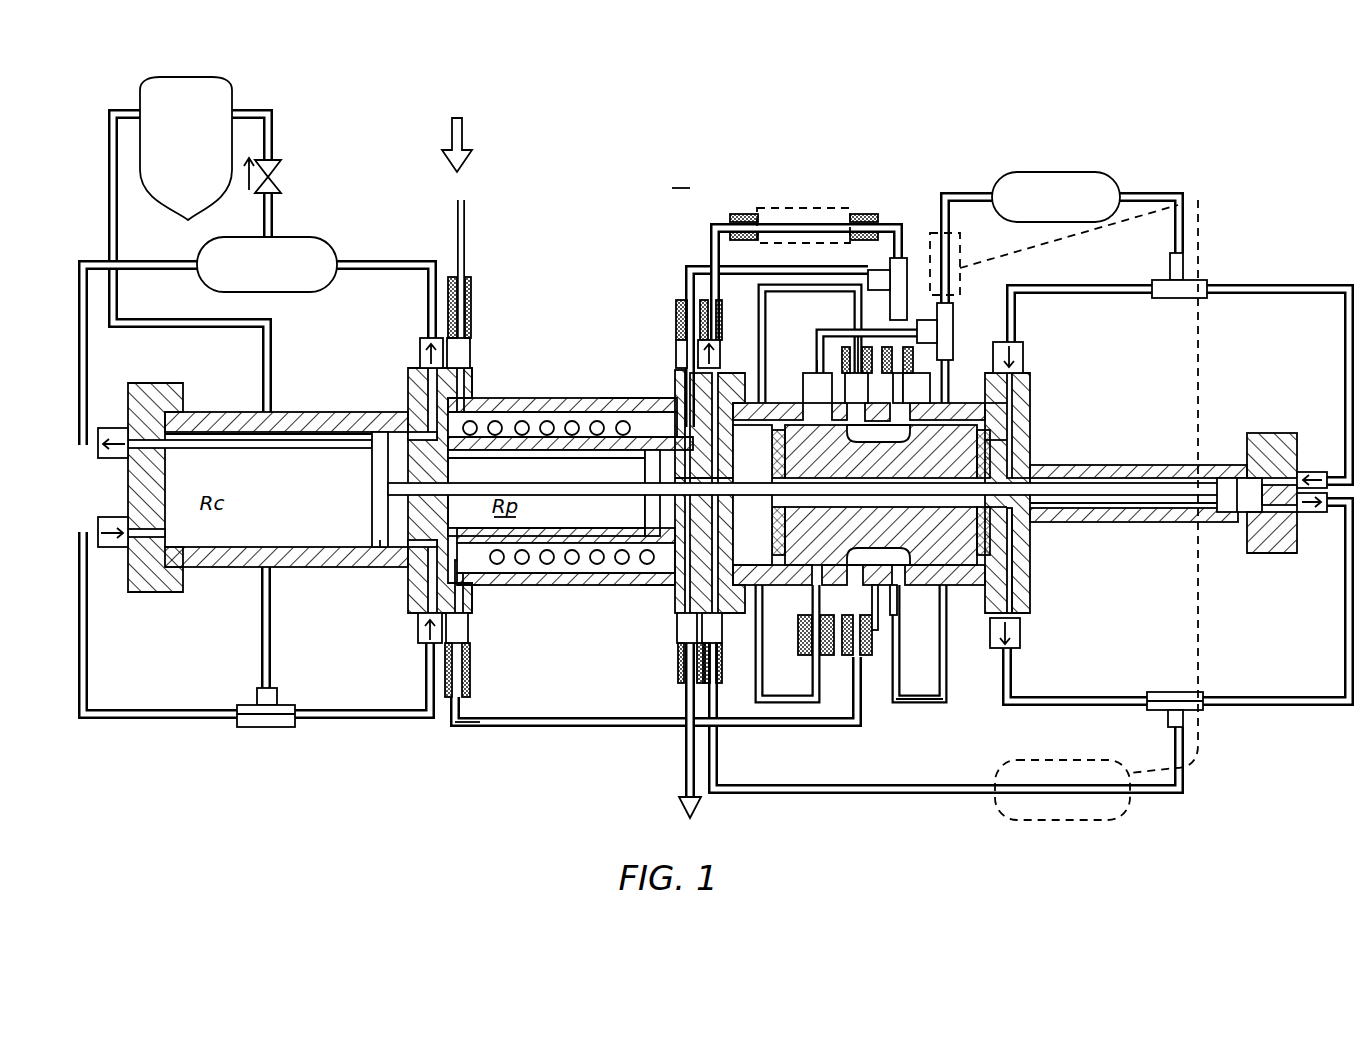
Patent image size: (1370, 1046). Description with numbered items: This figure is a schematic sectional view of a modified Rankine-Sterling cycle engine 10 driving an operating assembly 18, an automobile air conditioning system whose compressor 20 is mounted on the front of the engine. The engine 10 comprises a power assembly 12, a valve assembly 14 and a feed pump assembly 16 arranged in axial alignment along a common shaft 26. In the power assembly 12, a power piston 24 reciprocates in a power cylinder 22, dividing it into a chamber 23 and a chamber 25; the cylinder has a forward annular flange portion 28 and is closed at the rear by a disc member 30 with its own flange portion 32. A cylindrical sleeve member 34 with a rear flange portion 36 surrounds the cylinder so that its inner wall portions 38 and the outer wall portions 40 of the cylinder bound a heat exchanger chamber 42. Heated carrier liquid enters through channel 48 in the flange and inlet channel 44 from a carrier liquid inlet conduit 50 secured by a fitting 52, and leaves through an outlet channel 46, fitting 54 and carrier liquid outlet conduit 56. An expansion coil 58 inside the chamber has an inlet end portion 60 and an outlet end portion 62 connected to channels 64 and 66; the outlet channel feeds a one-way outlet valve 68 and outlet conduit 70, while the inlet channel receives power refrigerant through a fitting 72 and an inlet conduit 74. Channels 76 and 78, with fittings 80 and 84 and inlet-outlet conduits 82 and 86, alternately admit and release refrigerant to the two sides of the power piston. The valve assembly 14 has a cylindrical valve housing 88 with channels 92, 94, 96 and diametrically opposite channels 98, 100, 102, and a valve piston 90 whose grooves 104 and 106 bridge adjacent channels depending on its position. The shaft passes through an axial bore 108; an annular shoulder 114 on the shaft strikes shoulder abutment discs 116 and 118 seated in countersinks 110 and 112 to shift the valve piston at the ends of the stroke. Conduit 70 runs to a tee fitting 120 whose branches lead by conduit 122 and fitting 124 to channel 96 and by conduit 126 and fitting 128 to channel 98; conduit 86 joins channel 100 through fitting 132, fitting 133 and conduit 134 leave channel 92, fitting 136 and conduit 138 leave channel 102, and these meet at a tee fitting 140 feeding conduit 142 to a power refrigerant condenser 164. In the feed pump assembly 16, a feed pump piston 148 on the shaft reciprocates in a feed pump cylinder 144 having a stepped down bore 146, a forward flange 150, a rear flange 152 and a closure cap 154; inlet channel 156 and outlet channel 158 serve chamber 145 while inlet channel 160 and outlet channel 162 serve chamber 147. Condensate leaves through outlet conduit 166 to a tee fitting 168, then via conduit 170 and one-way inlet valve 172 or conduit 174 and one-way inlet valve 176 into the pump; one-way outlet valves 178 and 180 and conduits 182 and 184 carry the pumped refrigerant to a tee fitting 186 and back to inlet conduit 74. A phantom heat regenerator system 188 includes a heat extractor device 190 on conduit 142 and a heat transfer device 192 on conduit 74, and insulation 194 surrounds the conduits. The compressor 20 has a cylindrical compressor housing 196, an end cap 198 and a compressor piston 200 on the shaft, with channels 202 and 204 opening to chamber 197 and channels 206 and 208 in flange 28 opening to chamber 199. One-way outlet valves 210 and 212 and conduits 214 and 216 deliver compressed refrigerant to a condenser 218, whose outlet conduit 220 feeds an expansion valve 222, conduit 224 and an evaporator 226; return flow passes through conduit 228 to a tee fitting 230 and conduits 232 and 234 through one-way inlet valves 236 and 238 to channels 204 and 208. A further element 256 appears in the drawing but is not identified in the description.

The modified Rankine-Sterling cycle engine 10 is at (690, 183).
The power assembly 12 is at (576, 755).
The valve assembly 14 is at (905, 718).
The feed pump assembly 16 is at (1147, 595).
The operating assembly 18 is at (304, 752).
The compressor 20 is at (246, 584).
The power cylinder 22 is at (540, 412).
The chamber 23 is at (645, 467).
The power piston 24 is at (643, 508).
The chamber 25 is at (550, 473).
The shaft 26 is at (485, 460).
The annular flange portion 28 is at (465, 398).
The disc member 30 is at (722, 478).
The annular flange portion 32 is at (775, 562).
The cylindrical sleeve member 34 is at (620, 410).
The annular flange portion 36 is at (718, 392).
The inner wall portions 38 is at (535, 545).
The outer wall portions 40 is at (580, 585).
The heat exchanger chamber 42 is at (560, 398).
The inlet channel 44 is at (475, 400).
The outlet channel 46 is at (676, 597).
The channel 48 is at (470, 372).
The carrier liquid inlet conduit 50 is at (465, 236).
The fitting 52 is at (469, 340).
The fitting 54 is at (677, 628).
The carrier liquid outlet conduit 56 is at (690, 755).
The expansion coil 58 is at (600, 437).
The inlet end portion 60 is at (655, 560).
The outlet end portion 62 is at (672, 430).
The inlet channel 64 is at (722, 638).
The outlet channel 66 is at (705, 376).
The one-way outlet valve 68 is at (718, 340).
The outlet conduit 70 is at (716, 293).
The fitting 72 is at (707, 662).
The inlet conduit 74 is at (716, 692).
The inlet-outlet channel 76 is at (676, 372).
The inlet-outlet channel 78 is at (470, 612).
The fitting 80 is at (676, 345).
The inlet-outlet conduit 82 is at (688, 268).
The fitting 84 is at (468, 632).
The inlet-outlet conduit 86 is at (590, 718).
The cylindrical valve housing 88 is at (963, 403).
The valve piston 90 is at (772, 432).
The channel 92 is at (812, 400).
The channel 94 is at (843, 404).
The channel 96 is at (903, 396).
The channel 98 is at (812, 600).
The channel 100 is at (868, 586).
The channel 102 is at (900, 598).
The groove 104 is at (880, 422).
The groove 106 is at (814, 582).
The axial bore 108 is at (773, 456).
The countersink 110 is at (790, 530).
The countersink 112 is at (1000, 425).
The annular shoulder 114 is at (1000, 513).
The shoulder abutment disc 116 is at (773, 515).
The shoulder abutment disc 118 is at (1020, 440).
The tee fitting 120 is at (880, 262).
The conduit 122 is at (856, 330).
The fitting 124 is at (950, 375).
The conduit 126 is at (780, 290).
The fitting 128 is at (787, 642).
The fitting 132 is at (878, 640).
The fitting 133 is at (816, 375).
The conduit 134 is at (818, 334).
The fitting 136 is at (900, 640).
The conduit 138 is at (946, 660).
The tee fitting 140 is at (953, 340).
The conduit 142 is at (940, 195).
The feed pump cylinder 144 is at (1112, 465).
The chamber 145 is at (1228, 512).
The stepped down bore 146 is at (1012, 490).
The chamber 147 is at (1158, 522).
The feed pump piston 148 is at (1190, 465).
The annular flange 150 is at (1030, 380).
The annular flange 152 is at (1247, 435).
The cylinder closure cap 154 is at (1292, 433).
The inlet channel 156 is at (1272, 433).
The outlet channel 158 is at (1285, 553).
The inlet channel 160 is at (1012, 404).
The outlet channel 162 is at (1030, 578).
The power refrigerant condenser 164 is at (1072, 172).
The outlet conduit 166 is at (1160, 195).
The tee fitting 168 is at (1170, 264).
The conduit 170 is at (1275, 286).
The one-way inlet valve 172 is at (1312, 472).
The conduit 174 is at (1053, 286).
The one-way inlet valve 176 is at (1025, 347).
The one-way outlet valve 178 is at (1315, 512).
The one-way outlet valve 180 is at (1022, 634).
The conduit 182 is at (1280, 698).
The conduit 184 is at (1110, 698).
The tee fitting 186 is at (1178, 690).
The heat regenerator system 188 is at (1200, 242).
The heat extractor device 190 is at (962, 243).
The heat transfer device 192 is at (1022, 760).
The conduit insulation 194 is at (453, 264).
The cylindrical compressor housing 196 is at (297, 567).
The chamber 197 is at (284, 485).
The end cap 198 is at (152, 383).
The chamber 199 is at (372, 547).
The compressor piston 200 is at (370, 440).
The channel 202 is at (128, 455).
The channel 204 is at (140, 572).
The channel 206 is at (410, 385).
The channel 208 is at (410, 592).
The one-way outlet valve 210 is at (110, 428).
The one-way outlet valve 212 is at (420, 352).
The conduit 214 is at (168, 270).
The conduit 216 is at (370, 270).
The condenser 218 is at (338, 246).
The conduit 220 is at (273, 216).
The expansion valve 222 is at (282, 165).
The conduit 224 is at (272, 112).
The evaporator 226 is at (215, 77).
The conduit 228 is at (113, 150).
The tee fitting 230 is at (285, 700).
The conduit 232 is at (158, 710).
The conduit 234 is at (365, 710).
The one-way inlet valve 236 is at (105, 518).
The one-way inlet valve 238 is at (418, 628).
The heater 256 is at (840, 208).